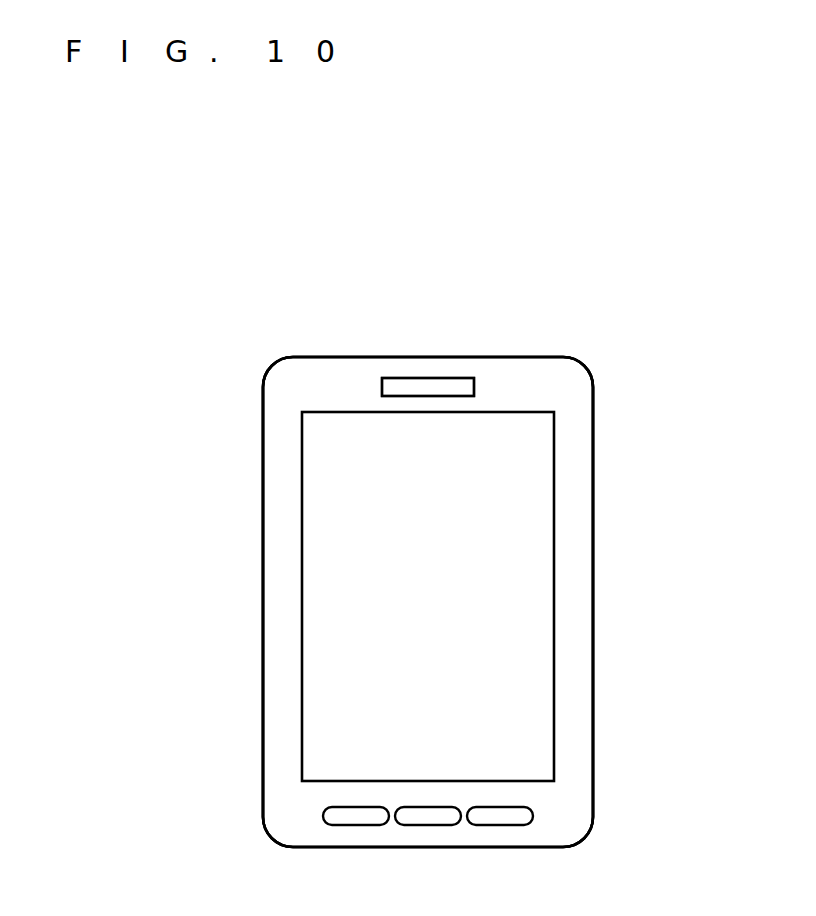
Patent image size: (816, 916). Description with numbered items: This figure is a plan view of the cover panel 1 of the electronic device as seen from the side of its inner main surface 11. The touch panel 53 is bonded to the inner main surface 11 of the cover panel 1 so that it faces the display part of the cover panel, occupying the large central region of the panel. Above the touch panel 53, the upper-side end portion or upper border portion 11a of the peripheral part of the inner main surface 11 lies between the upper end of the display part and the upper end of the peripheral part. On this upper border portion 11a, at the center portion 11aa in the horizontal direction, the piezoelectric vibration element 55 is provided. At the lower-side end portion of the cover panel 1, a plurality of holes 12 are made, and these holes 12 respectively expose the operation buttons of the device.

The cover panel 1 is at (528, 352).
The inner main surface 11 is at (577, 540).
The upper-side end portion 11a is at (301, 376).
The center portion 11aa is at (441, 370).
The piezoelectric vibration element 55 is at (407, 386).
The touch panel 53 is at (517, 630).
The holes 12 is at (342, 817).